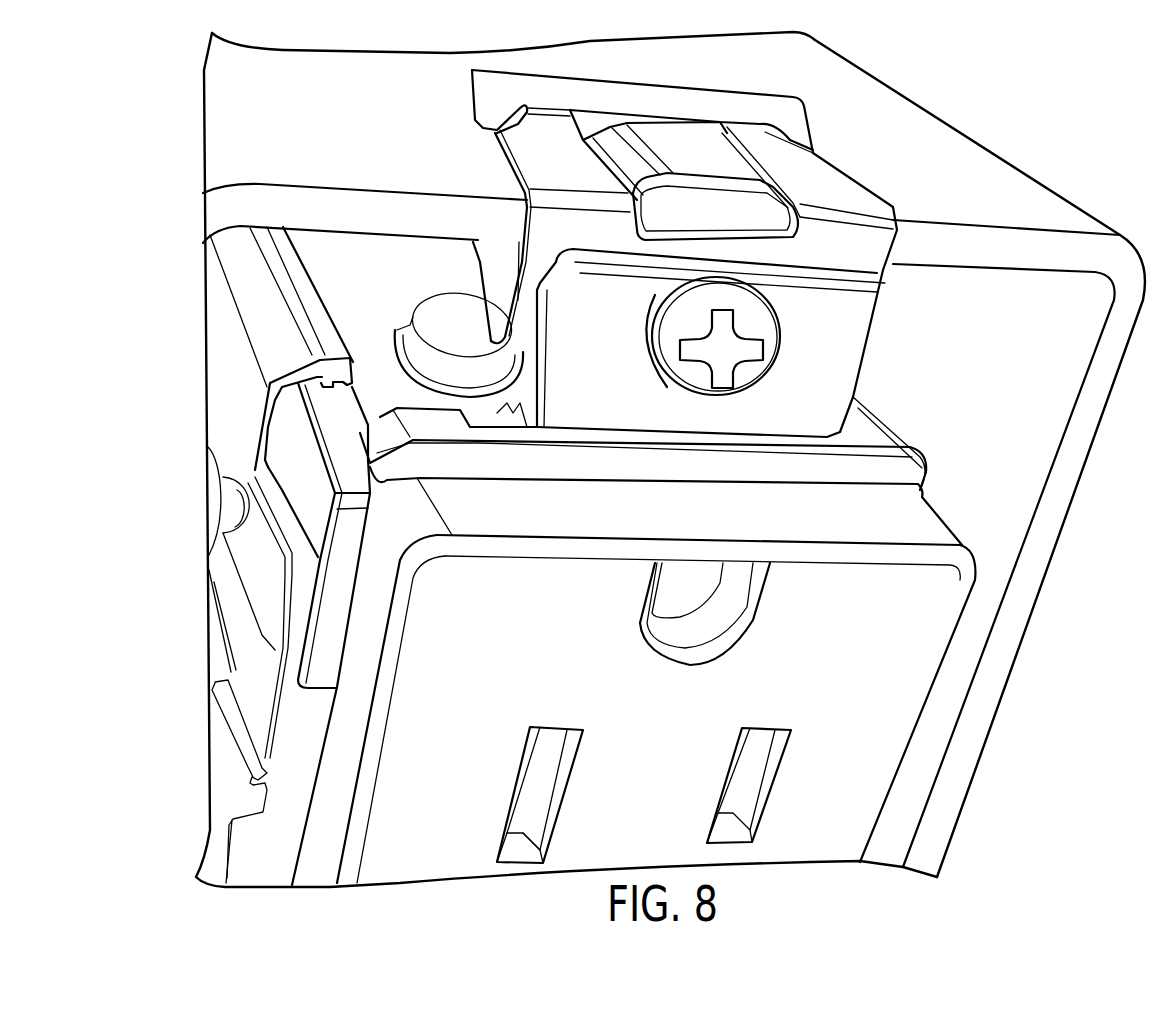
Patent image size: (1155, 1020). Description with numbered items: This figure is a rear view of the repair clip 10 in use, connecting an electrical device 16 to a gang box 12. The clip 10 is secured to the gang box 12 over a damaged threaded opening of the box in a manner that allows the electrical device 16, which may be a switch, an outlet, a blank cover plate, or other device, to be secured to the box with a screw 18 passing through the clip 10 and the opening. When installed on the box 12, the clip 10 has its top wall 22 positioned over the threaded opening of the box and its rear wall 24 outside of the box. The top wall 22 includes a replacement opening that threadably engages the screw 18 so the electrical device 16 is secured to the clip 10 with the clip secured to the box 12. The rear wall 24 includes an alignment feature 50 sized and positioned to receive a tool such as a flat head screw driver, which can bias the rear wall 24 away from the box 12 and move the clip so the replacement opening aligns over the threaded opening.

The repair clip 10 is at (885, 134).
The gang box 12 is at (215, 212).
The electrical device 16 is at (900, 656).
The screw 18 is at (750, 373).
The top wall 22 is at (868, 252).
The rear wall 24 is at (547, 133).
The alignment feature 50 is at (708, 177).